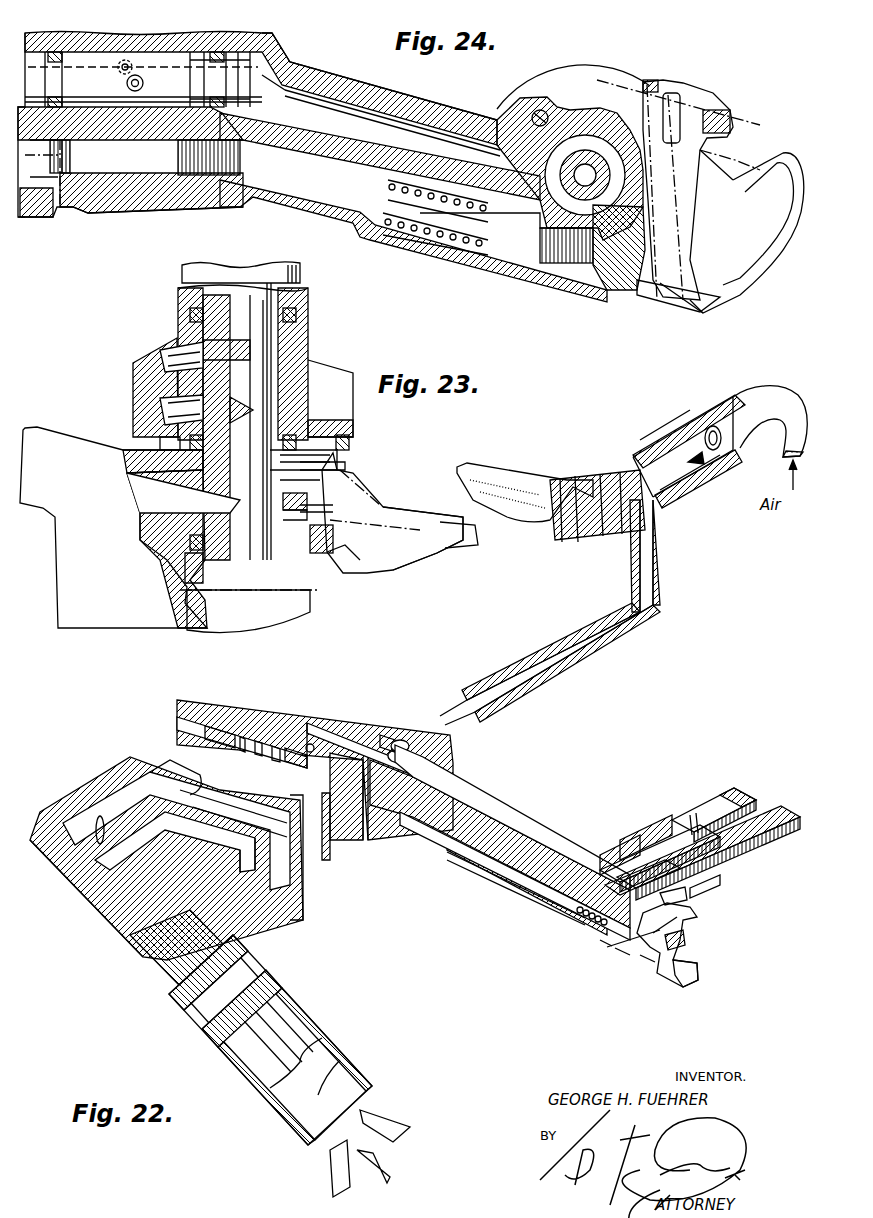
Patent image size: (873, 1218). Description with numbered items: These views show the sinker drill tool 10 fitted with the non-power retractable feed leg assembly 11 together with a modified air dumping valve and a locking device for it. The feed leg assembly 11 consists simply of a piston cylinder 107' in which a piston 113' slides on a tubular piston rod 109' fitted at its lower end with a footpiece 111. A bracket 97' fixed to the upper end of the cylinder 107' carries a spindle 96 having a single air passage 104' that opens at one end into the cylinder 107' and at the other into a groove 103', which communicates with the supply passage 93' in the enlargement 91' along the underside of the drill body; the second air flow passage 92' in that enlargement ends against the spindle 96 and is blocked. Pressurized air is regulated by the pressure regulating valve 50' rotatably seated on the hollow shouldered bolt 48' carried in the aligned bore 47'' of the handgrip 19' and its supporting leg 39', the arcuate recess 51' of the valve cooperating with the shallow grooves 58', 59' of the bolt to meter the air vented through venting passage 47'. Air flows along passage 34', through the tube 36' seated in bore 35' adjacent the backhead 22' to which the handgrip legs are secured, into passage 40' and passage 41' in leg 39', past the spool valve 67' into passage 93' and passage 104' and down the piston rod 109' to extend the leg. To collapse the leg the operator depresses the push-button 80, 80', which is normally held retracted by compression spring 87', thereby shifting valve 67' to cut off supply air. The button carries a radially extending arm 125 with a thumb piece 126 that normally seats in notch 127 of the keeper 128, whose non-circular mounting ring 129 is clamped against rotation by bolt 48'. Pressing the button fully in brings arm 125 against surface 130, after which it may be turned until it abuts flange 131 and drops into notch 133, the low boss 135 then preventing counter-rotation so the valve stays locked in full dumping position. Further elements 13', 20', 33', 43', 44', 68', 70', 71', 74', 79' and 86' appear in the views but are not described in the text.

In FIG. 24, the drill tool 10 is at (33, 212).
In FIG. 22, the feed leg assembly 11 is at (207, 1043).
In FIG. 22, the air inlet elbow 13' is at (770, 421).
In FIG. 23, the handgrip 19' is at (265, 272).
In FIG. 22, the handgrip 19' is at (708, 853).
In FIG. 22, the nozzle 20' is at (525, 503).
In FIG. 24, the backhead 22' is at (130, 173).
In FIG. 22, the backhead 22' is at (689, 447).
In FIG. 22, the air passage 33' is at (666, 556).
In FIG. 22, the passage 34' is at (550, 664).
In FIG. 24, the bore 35' is at (131, 40).
In FIG. 24, the tube 36' is at (111, 48).
In FIG. 22, the tube 36' is at (404, 725).
In FIG. 24, the supporting leg 39' is at (379, 76).
In FIG. 23, the supporting leg 39' is at (113, 508).
In FIG. 22, the supporting leg 39' is at (403, 817).
In FIG. 22, the passage 40' is at (378, 740).
In FIG. 24, the passage 41' is at (381, 112).
In FIG. 23, the passage 41' is at (170, 493).
In FIG. 22, the passage 41' is at (512, 817).
In FIG. 22, the threaded fitting 43' is at (597, 514).
In FIG. 24, the collar 44' is at (195, 56).
In FIG. 24, the venting passage 47' is at (595, 109).
In FIG. 23, the venting passage 47' is at (229, 404).
In FIG. 22, the bore 47'' is at (701, 800).
In FIG. 24, the hollow shouldered bolt 48' is at (570, 163).
In FIG. 23, the hollow shouldered bolt 48' is at (250, 475).
In FIG. 22, the hollow shouldered bolt 48' is at (714, 803).
In FIG. 23, the pressure regulating valve 50' is at (271, 362).
In FIG. 22, the pressure regulating valve 50' is at (681, 878).
In FIG. 23, the arcuate recess 51' is at (141, 387).
In FIG. 22, the arcuate recess 51' is at (679, 858).
In FIG. 23, the groove 58' is at (159, 410).
In FIG. 22, the groove 58' is at (614, 845).
In FIG. 23, the groove 59' is at (181, 344).
In FIG. 22, the groove 59' is at (646, 828).
In FIG. 22, the spool valve 67' is at (242, 724).
In FIG. 22, the rail 68' is at (242, 722).
In FIG. 22, the block 70' is at (286, 733).
In FIG. 22, the wall 71' is at (310, 826).
In FIG. 22, the tube 74' is at (323, 716).
In FIG. 24, the rod 79' is at (66, 185).
In FIG. 22, the rod 79' is at (372, 818).
In FIG. 23, the push-button 80 is at (423, 553).
In FIG. 24, the push-button 80' is at (570, 271).
In FIG. 22, the push-button 80' is at (633, 968).
In FIG. 24, the rod 86' is at (380, 176).
In FIG. 22, the rod 86' is at (515, 876).
In FIG. 24, the compression spring 87' is at (488, 228).
In FIG. 22, the compression spring 87' is at (562, 925).
In FIG. 22, the enlargement 91' is at (290, 872).
In FIG. 22, the second air flow passage 92' is at (240, 883).
In FIG. 22, the supply passage 93' is at (233, 811).
In FIG. 22, the spindle 96 is at (150, 780).
In FIG. 22, the bracket 97' is at (86, 898).
In FIG. 22, the groove 103' is at (174, 771).
In FIG. 22, the air passage 104' is at (129, 848).
In FIG. 22, the piston cylinder 107' is at (329, 1083).
In FIG. 22, the piston rod 109' is at (172, 949).
In FIG. 22, the footpiece 111 is at (385, 1120).
In FIG. 22, the piston 113' is at (295, 1063).
In FIG. 24, the arm 125 is at (646, 84).
In FIG. 23, the arm 125 is at (302, 465).
In FIG. 22, the arm 125 is at (690, 947).
In FIG. 24, the thumb piece 126 is at (765, 245).
In FIG. 23, the thumb piece 126 is at (457, 557).
In FIG. 22, the thumb piece 126 is at (700, 970).
In FIG. 24, the notch 127 is at (685, 128).
In FIG. 23, the notch 127 is at (345, 515).
In FIG. 22, the notch 127 is at (645, 962).
In FIG. 24, the keeper 128 is at (700, 95).
In FIG. 23, the keeper 128 is at (365, 478).
In FIG. 22, the keeper 128 is at (692, 922).
In FIG. 23, the mounting ring 129 is at (183, 572).
In FIG. 24, the surface 130 is at (592, 150).
In FIG. 23, the surface 130 is at (300, 503).
In FIG. 22, the surface 130 is at (605, 946).
In FIG. 24, the flange 131 is at (566, 72).
In FIG. 23, the flange 131 is at (350, 458).
In FIG. 22, the flange 131 is at (722, 888).
In FIG. 23, the notch 133 is at (310, 492).
In FIG. 22, the notch 133 is at (690, 900).
In FIG. 24, the boss 135 is at (656, 103).
In FIG. 23, the boss 135 is at (305, 512).
In FIG. 22, the boss 135 is at (620, 957).